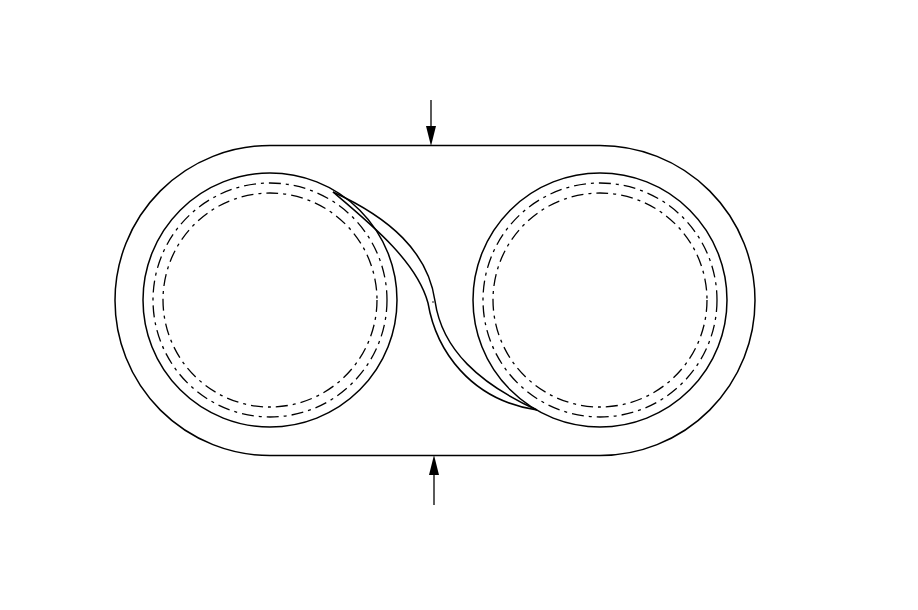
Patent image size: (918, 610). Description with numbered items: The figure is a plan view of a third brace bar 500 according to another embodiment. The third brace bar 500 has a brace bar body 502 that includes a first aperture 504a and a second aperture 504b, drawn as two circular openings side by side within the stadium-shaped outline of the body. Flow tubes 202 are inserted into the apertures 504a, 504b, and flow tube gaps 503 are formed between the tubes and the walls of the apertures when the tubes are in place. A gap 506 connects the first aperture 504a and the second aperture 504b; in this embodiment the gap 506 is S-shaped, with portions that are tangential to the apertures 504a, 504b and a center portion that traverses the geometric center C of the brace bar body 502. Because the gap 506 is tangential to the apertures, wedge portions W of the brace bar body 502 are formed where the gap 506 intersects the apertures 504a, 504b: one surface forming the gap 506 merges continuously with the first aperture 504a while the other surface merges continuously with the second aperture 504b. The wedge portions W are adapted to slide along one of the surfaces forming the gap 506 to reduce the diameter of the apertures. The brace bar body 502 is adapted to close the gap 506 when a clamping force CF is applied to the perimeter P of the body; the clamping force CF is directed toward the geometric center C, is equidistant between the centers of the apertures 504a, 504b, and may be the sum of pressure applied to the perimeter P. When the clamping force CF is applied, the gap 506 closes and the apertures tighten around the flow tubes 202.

The third brace bar 500 is at (779, 100).
The brace bar body 502 is at (345, 157).
The flow tube gaps 503 is at (205, 405).
The first aperture 504a is at (172, 226).
The second aperture 504b is at (722, 274).
The gap 506 is at (420, 267).
The flow tubes 202 is at (157, 309).
The perimeter P is at (667, 160).
The clamping force CF is at (430, 303).
The wedge portions W is at (392, 237).
The geometric center C is at (433, 302).